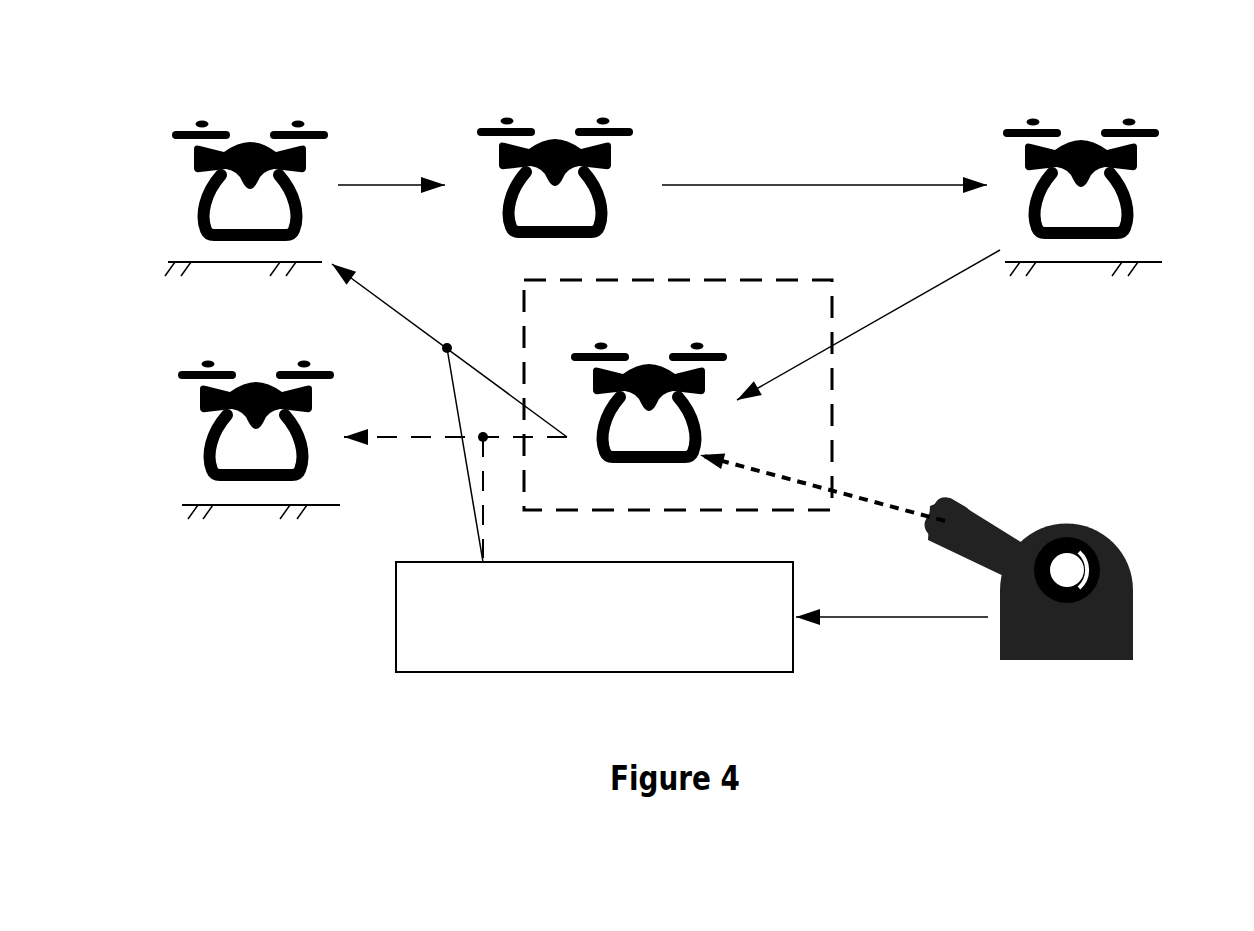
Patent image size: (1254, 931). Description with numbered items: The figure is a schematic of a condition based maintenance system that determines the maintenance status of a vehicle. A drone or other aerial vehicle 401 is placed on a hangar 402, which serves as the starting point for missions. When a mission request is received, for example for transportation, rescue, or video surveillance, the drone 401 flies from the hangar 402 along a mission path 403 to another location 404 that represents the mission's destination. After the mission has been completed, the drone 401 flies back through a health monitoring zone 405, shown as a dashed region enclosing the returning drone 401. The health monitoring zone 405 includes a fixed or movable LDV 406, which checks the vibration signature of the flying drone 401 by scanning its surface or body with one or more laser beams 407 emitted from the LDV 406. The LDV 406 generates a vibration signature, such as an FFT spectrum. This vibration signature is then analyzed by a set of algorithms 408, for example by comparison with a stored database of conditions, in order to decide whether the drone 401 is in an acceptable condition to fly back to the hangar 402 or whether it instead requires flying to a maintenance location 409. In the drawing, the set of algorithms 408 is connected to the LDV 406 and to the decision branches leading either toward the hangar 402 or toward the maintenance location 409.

The drone 401 is at (250, 140).
The hangar 402 is at (172, 260).
The mission path 403 is at (824, 163).
The location 404 is at (1160, 259).
The health monitoring zone 405 is at (836, 422).
The LDV 406 is at (1124, 556).
The laser beams 407 is at (893, 503).
The set of algorithms 408 is at (660, 468).
The maintenance location 409 is at (186, 502).